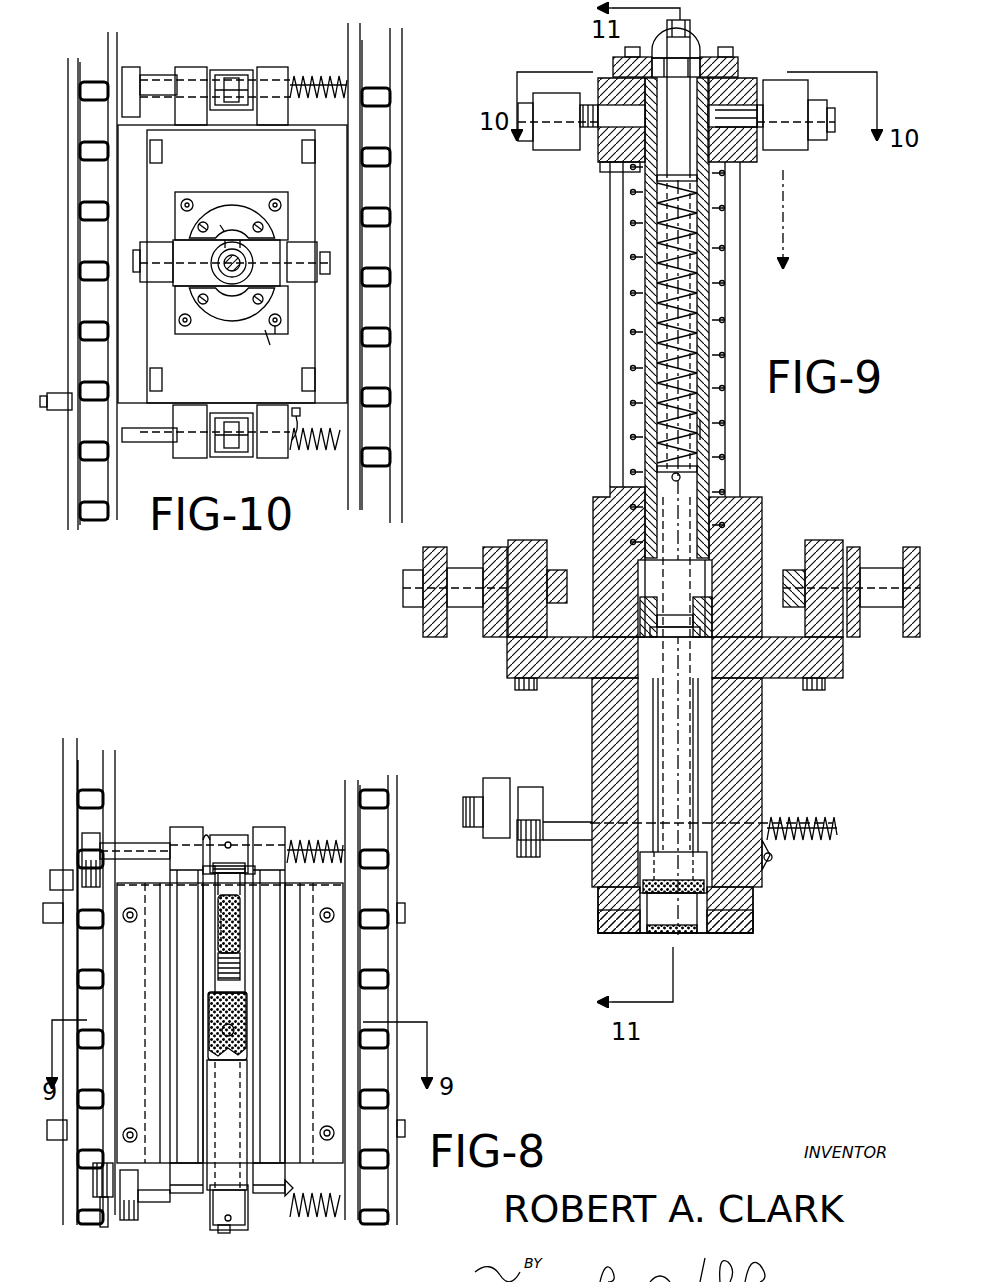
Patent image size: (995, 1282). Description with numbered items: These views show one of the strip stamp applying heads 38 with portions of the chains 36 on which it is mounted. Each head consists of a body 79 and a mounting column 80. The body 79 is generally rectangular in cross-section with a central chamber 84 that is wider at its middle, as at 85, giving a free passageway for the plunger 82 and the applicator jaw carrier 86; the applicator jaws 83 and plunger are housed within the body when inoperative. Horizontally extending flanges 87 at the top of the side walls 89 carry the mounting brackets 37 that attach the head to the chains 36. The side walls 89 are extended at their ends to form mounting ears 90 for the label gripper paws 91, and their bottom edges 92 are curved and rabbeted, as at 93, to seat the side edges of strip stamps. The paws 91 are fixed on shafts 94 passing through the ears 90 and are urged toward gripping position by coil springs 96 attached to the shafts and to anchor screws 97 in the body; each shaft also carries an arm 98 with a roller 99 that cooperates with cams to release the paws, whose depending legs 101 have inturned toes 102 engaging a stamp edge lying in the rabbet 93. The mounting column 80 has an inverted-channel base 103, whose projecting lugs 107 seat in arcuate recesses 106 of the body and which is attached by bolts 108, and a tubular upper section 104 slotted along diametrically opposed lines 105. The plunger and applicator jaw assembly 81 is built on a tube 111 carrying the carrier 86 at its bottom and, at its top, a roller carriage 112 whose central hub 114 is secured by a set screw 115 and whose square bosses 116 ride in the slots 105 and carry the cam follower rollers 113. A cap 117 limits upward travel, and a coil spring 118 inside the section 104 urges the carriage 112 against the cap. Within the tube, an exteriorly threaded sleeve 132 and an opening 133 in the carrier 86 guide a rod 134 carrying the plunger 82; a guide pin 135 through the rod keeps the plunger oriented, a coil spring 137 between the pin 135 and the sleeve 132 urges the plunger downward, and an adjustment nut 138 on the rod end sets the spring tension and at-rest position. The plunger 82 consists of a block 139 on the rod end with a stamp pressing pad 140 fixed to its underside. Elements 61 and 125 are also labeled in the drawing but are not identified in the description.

In FIG. 10, the chains 36 is at (82, 45).
In FIG. 9, the chains 36 is at (435, 550).
In FIG. 8, the chains 36 is at (105, 765).
In FIG. 10, the mounting brackets 37 is at (330, 330).
In FIG. 9, the mounting brackets 37 is at (525, 540).
In FIG. 10, the stamp applying heads 38 is at (296, 206).
In FIG. 9, the stamp applying heads 38 is at (788, 762).
In FIG. 8, the stamp applying heads 38 is at (240, 822).
In FIG. 9, the grinding tip 61 is at (690, 935).
In FIG. 8, the grinding tip 61 is at (235, 1095).
In FIG. 9, the body 79 is at (590, 735).
In FIG. 10, the mounting column 80 is at (232, 192).
In FIG. 9, the mounting column 80 is at (768, 497).
In FIG. 9, the plunger and applicator jaw assembly 81 is at (712, 436).
In FIG. 9, the plunger 82 is at (705, 838).
In FIG. 8, the plunger 82 is at (225, 1000).
In FIG. 8, the applicator jaws 83 is at (218, 915).
In FIG. 9, the central chamber 84 is at (707, 730).
In FIG. 8, the central chamber 84 is at (228, 885).
In FIG. 9, the wider middle portion of central chamber 85 is at (707, 752).
In FIG. 8, the wider middle portion of central chamber 85 is at (218, 965).
In FIG. 9, the applicator jaw carrier 86 is at (640, 600).
In FIG. 9, the flanges 87 is at (565, 680).
In FIG. 8, the flanges 87 is at (320, 1150).
In FIG. 9, the side walls 89 is at (635, 760).
In FIG. 8, the side walls 89 is at (185, 1025).
In FIG. 10, the mounting ears 90 is at (190, 68).
In FIG. 8, the mounting ears 90 is at (180, 827).
In FIG. 10, the label gripper paws 91 is at (235, 66).
In FIG. 8, the label gripper paws 91 is at (222, 833).
In FIG. 9, the bottom edges 92 is at (610, 935).
In FIG. 8, the bottom edges 92 is at (285, 945).
In FIG. 9, the rabbet 93 is at (640, 920).
In FIG. 8, the rabbet 93 is at (265, 905).
In FIG. 10, the shafts 94 is at (155, 72).
In FIG. 9, the shafts 94 is at (562, 820).
In FIG. 8, the shafts 94 is at (125, 845).
In FIG. 10, the coil springs 96 is at (320, 73).
In FIG. 9, the coil springs 96 is at (815, 822).
In FIG. 8, the coil springs 96 is at (320, 840).
In FIG. 10, the anchor screws 97 is at (295, 412).
In FIG. 9, the anchor screws 97 is at (775, 872).
In FIG. 8, the anchor screws 97 is at (292, 1188).
In FIG. 9, the arm 98 is at (518, 855).
In FIG. 8, the arm 98 is at (82, 840).
In FIG. 9, the roller 99 is at (495, 778).
In FIG. 8, the roller 99 is at (100, 1205).
In FIG. 8, the depending legs 101 is at (207, 835).
In FIG. 8, the inturned toes 102 is at (212, 868).
In FIG. 10, the base 103 is at (190, 192).
In FIG. 9, the base 103 is at (597, 518).
In FIG. 10, the tubular upper section 104 is at (262, 218).
In FIG. 9, the tubular upper section 104 is at (615, 280).
In FIG. 10, the slots 105 is at (270, 235).
In FIG. 9, the slots 105 is at (735, 322).
In FIG. 9, the arcuate recesses 106 is at (630, 657).
In FIG. 9, the projecting lugs 107 is at (645, 620).
In FIG. 10, the bolts 108 is at (275, 325).
In FIG. 10, the tube 111 is at (225, 220).
In FIG. 9, the tube 111 is at (705, 342).
In FIG. 10, the roller carriage 112 is at (250, 325).
In FIG. 9, the roller carriage 112 is at (769, 219).
In FIG. 10, the cam follower rollers 113 is at (150, 272).
In FIG. 9, the cam follower rollers 113 is at (570, 92).
In FIG. 10, the central hub 114 is at (205, 300).
In FIG. 9, the central hub 114 is at (640, 165).
In FIG. 10, the set screw 115 is at (283, 255).
In FIG. 9, the square bosses 116 is at (600, 160).
In FIG. 9, the cap 117 is at (740, 66).
In FIG. 9, the coil spring 118 is at (722, 283).
In FIG. 8, the plunger bore 125 is at (225, 935).
In FIG. 10, the sleeve 132 is at (236, 218).
In FIG. 9, the sleeve 132 is at (702, 62).
In FIG. 9, the opening 133 is at (712, 600).
In FIG. 10, the rod 134 is at (232, 272).
In FIG. 9, the rod 134 is at (690, 415).
In FIG. 9, the guide pin 135 is at (682, 476).
In FIG. 9, the coil spring 137 is at (660, 362).
In FIG. 9, the adjustment nut 138 is at (678, 58).
In FIG. 9, the block 139 is at (645, 862).
In FIG. 9, the stamp pressing pad 140 is at (660, 935).
In FIG. 8, the stamp pressing pad 140 is at (240, 1040).